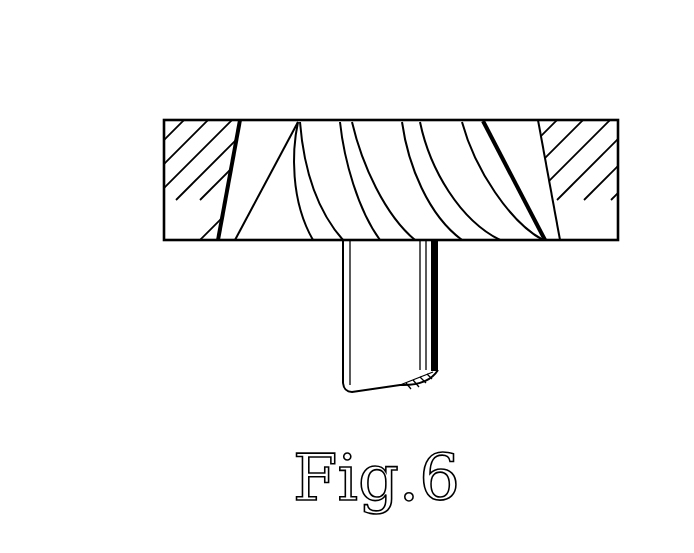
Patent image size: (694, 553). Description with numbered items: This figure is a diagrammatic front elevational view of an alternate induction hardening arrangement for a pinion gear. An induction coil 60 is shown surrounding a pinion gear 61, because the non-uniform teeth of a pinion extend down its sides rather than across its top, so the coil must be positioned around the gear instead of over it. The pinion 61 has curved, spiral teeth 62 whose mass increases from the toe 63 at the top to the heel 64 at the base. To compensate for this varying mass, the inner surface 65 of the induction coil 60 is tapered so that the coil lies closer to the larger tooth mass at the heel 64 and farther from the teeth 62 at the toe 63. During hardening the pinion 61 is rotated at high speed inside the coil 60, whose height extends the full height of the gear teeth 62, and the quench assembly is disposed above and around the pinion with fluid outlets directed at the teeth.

The induction coil 60 is at (620, 167).
The pinion gear 61 is at (493, 138).
The curved (spiral) teeth 62 is at (332, 231).
The toe 63 is at (347, 122).
The heel 64 is at (403, 231).
The inner surface 65 is at (246, 137).